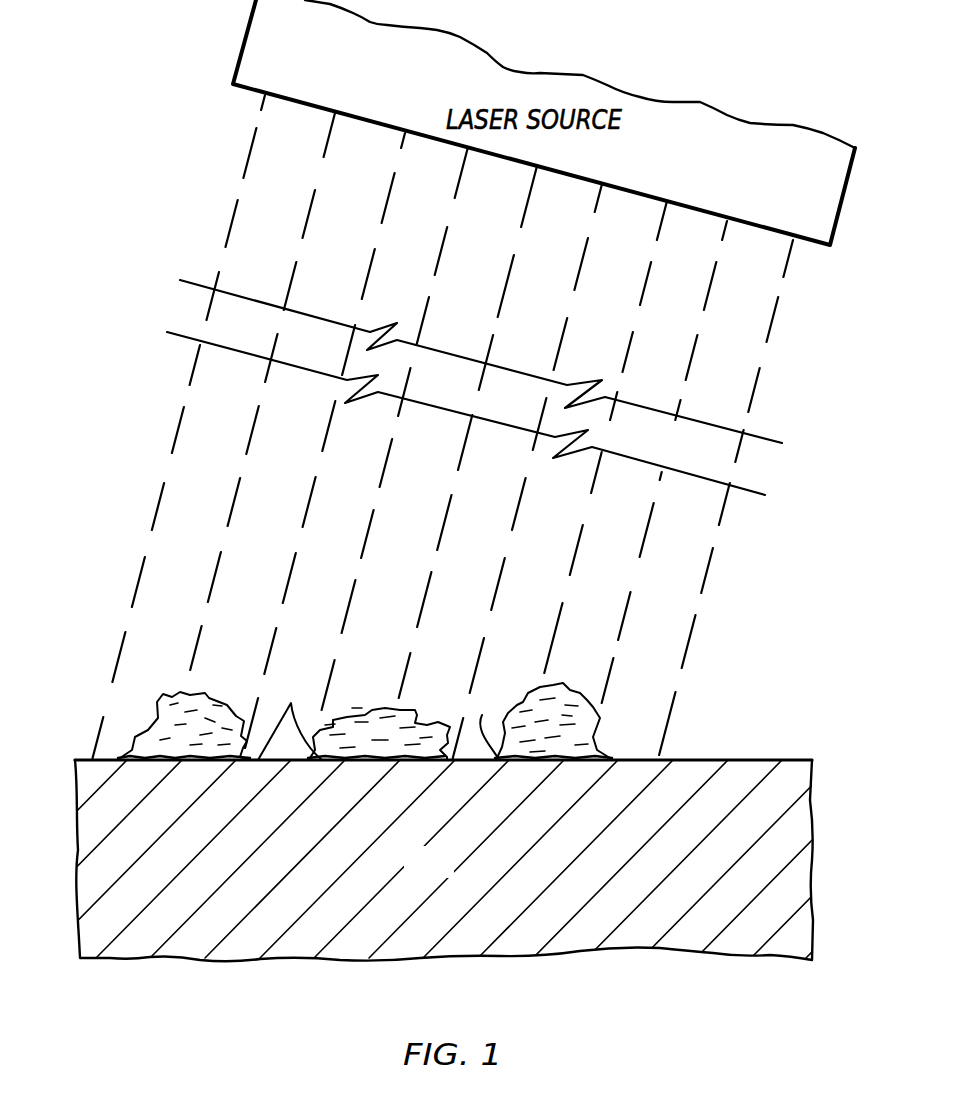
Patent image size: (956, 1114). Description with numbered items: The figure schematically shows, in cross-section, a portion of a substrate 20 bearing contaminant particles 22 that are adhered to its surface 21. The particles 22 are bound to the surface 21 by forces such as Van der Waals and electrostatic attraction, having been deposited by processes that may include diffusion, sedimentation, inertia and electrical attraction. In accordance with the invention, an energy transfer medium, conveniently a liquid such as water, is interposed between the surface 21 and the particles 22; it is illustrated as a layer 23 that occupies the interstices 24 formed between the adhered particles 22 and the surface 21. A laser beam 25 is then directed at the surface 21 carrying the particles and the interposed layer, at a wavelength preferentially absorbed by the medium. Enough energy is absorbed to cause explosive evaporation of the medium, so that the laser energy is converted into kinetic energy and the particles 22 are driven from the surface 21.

The substrate 20 is at (449, 875).
The surface 21 is at (695, 760).
The contaminant particles 22 is at (210, 702).
The layer 23 is at (291, 703).
The interstices 24 is at (167, 753).
The laser beam 25 is at (430, 527).